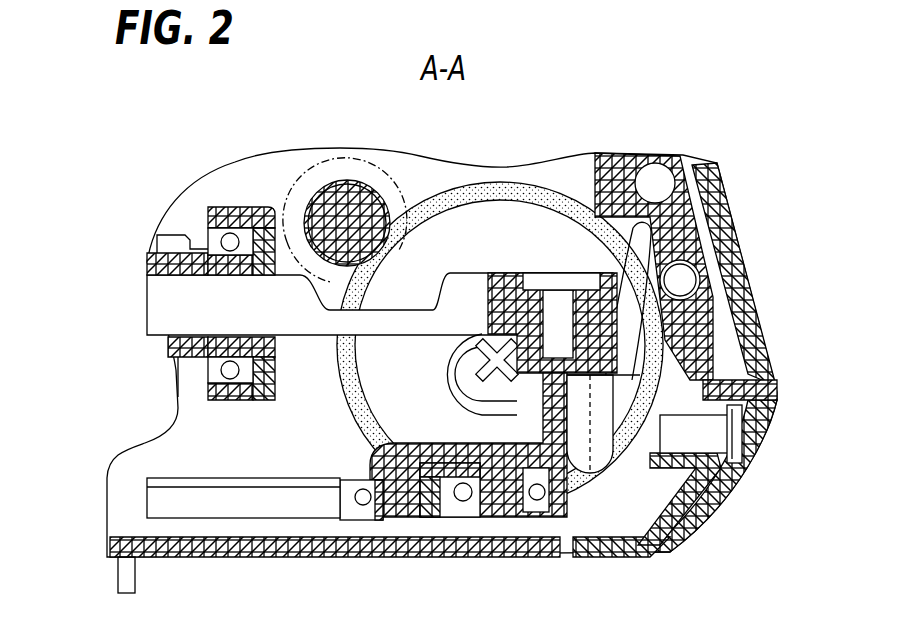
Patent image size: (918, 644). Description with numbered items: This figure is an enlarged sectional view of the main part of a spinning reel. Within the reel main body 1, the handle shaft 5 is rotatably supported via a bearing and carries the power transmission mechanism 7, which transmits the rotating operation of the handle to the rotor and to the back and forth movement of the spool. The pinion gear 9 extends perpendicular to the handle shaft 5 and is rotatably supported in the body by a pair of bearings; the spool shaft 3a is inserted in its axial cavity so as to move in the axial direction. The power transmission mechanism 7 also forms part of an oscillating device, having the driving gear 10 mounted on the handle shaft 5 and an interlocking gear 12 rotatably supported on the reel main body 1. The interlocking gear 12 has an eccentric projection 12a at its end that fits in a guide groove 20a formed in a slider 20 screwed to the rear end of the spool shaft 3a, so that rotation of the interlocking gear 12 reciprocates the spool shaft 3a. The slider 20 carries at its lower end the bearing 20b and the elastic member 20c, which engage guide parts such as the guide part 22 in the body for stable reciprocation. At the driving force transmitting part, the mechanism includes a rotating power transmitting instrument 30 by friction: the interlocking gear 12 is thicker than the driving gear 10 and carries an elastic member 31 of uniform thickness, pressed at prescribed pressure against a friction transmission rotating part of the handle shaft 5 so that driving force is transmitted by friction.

The reel main body 1 is at (628, 163).
The spool shaft 3a is at (167, 305).
The handle shaft 5 is at (340, 215).
The power transmission mechanism 7 is at (245, 420).
The pinion gear 9 is at (148, 257).
The driving gear 10 is at (319, 168).
The interlocking gear 12 is at (528, 233).
The eccentric projection 12a is at (663, 423).
The slider 20 is at (700, 397).
The guide groove 20a is at (653, 477).
The bearing 20b is at (343, 503).
The elastic member 20c is at (670, 547).
The guide part 22 is at (155, 503).
The rotating power transmitting instrument 30 is at (413, 200).
The elastic member 31 is at (487, 193).